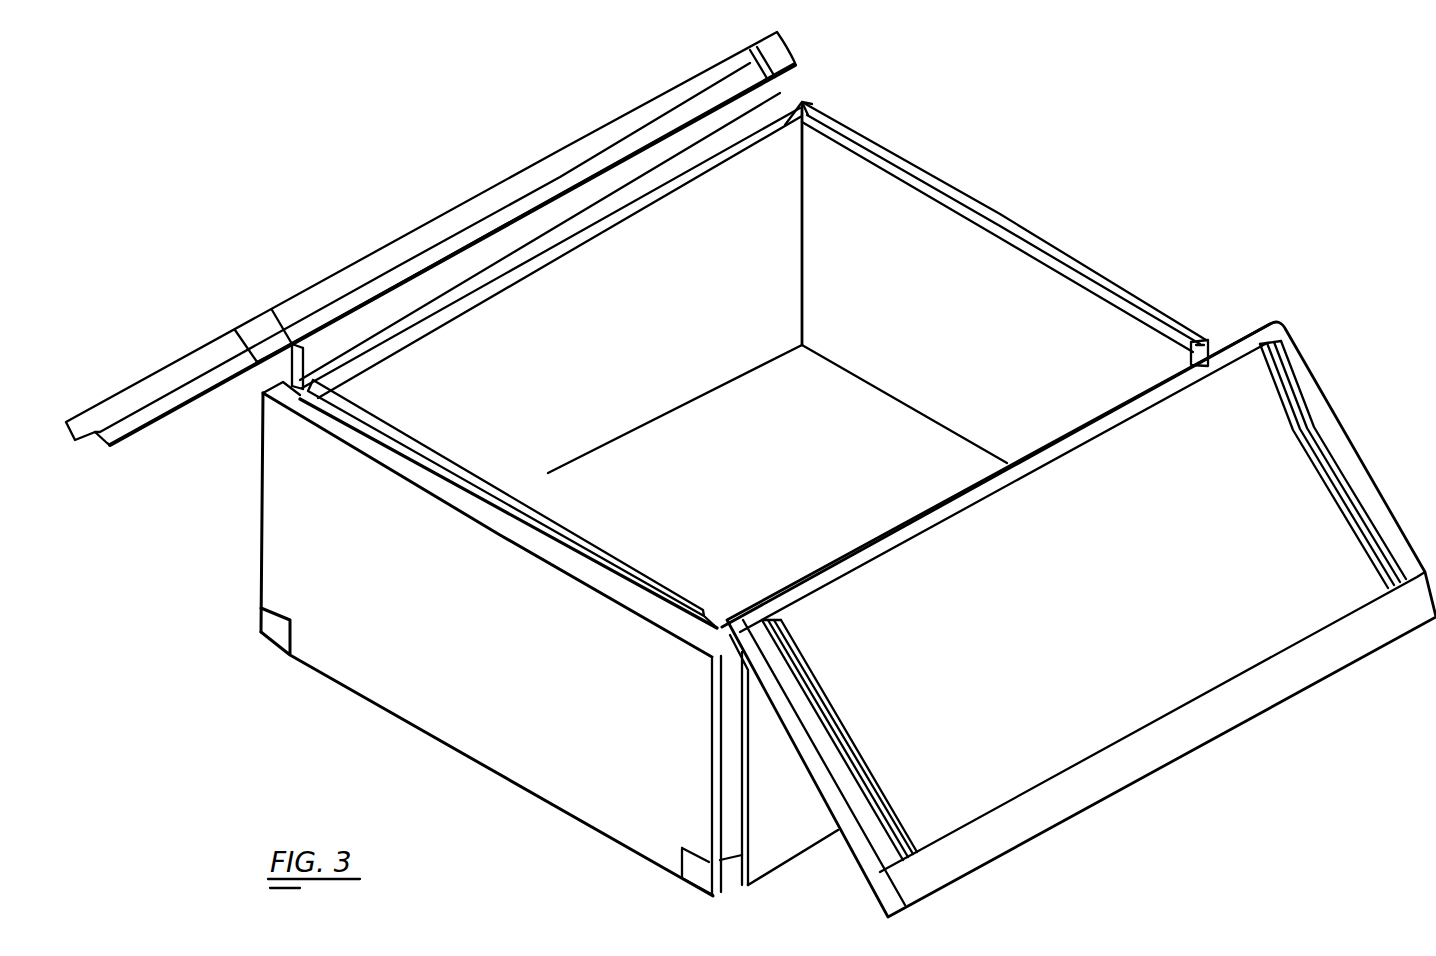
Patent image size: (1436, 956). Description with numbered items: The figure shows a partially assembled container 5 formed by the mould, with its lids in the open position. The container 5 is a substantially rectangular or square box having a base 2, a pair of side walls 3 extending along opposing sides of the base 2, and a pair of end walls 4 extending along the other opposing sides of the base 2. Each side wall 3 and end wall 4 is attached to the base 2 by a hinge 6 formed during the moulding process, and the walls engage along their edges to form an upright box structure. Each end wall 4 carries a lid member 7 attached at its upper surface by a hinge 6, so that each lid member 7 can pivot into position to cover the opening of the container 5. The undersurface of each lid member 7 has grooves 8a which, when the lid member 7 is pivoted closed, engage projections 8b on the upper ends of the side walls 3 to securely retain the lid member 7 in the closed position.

The base 2 is at (750, 506).
The side wall 3 is at (955, 340).
The end wall 4 is at (612, 350).
The container 5 is at (1053, 192).
The hinge 6 is at (763, 98).
The lid member 7 is at (187, 378).
The groove 8a is at (1305, 410).
The projection 8b is at (423, 452).